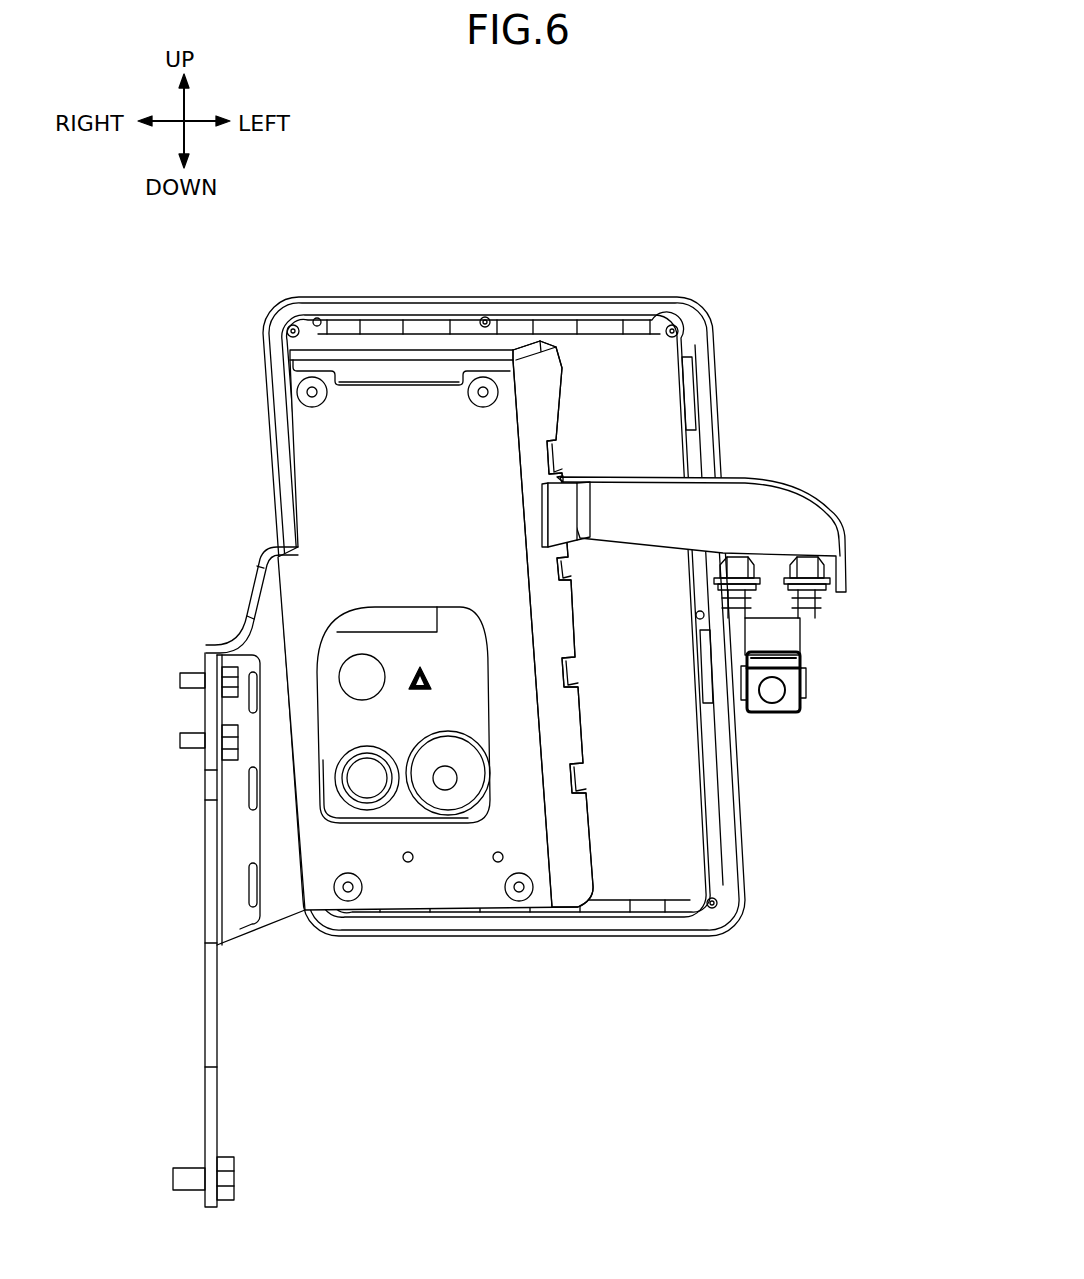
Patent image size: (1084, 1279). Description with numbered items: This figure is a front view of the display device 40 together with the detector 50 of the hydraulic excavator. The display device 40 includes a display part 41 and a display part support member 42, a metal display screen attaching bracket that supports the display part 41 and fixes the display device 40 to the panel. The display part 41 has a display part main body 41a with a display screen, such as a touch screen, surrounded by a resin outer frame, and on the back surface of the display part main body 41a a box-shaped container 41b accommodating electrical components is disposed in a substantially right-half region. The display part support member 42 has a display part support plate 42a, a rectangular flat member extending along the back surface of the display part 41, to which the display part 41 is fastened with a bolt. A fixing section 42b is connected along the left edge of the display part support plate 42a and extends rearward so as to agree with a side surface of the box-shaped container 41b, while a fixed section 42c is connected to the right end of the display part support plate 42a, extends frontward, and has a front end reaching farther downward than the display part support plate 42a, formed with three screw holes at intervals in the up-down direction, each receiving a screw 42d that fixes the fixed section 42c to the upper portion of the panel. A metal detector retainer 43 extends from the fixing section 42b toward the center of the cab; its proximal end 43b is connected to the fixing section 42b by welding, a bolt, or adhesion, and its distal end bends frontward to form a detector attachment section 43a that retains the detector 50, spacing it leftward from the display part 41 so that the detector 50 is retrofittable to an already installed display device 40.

The display device 40 is at (174, 291).
The display part 41 is at (648, 297).
The display part main body 41a is at (492, 297).
The box-shaped container 41b is at (418, 340).
The display part support member 42 is at (307, 432).
The display part support plate 42a is at (313, 476).
The fixing section 42b is at (545, 417).
The fixed section 42c is at (238, 598).
The screw 42d is at (181, 681).
The detector retainer 43 is at (775, 480).
The detector attachment section 43a is at (832, 590).
The proximal end 43b is at (560, 507).
The detector 50 is at (800, 695).